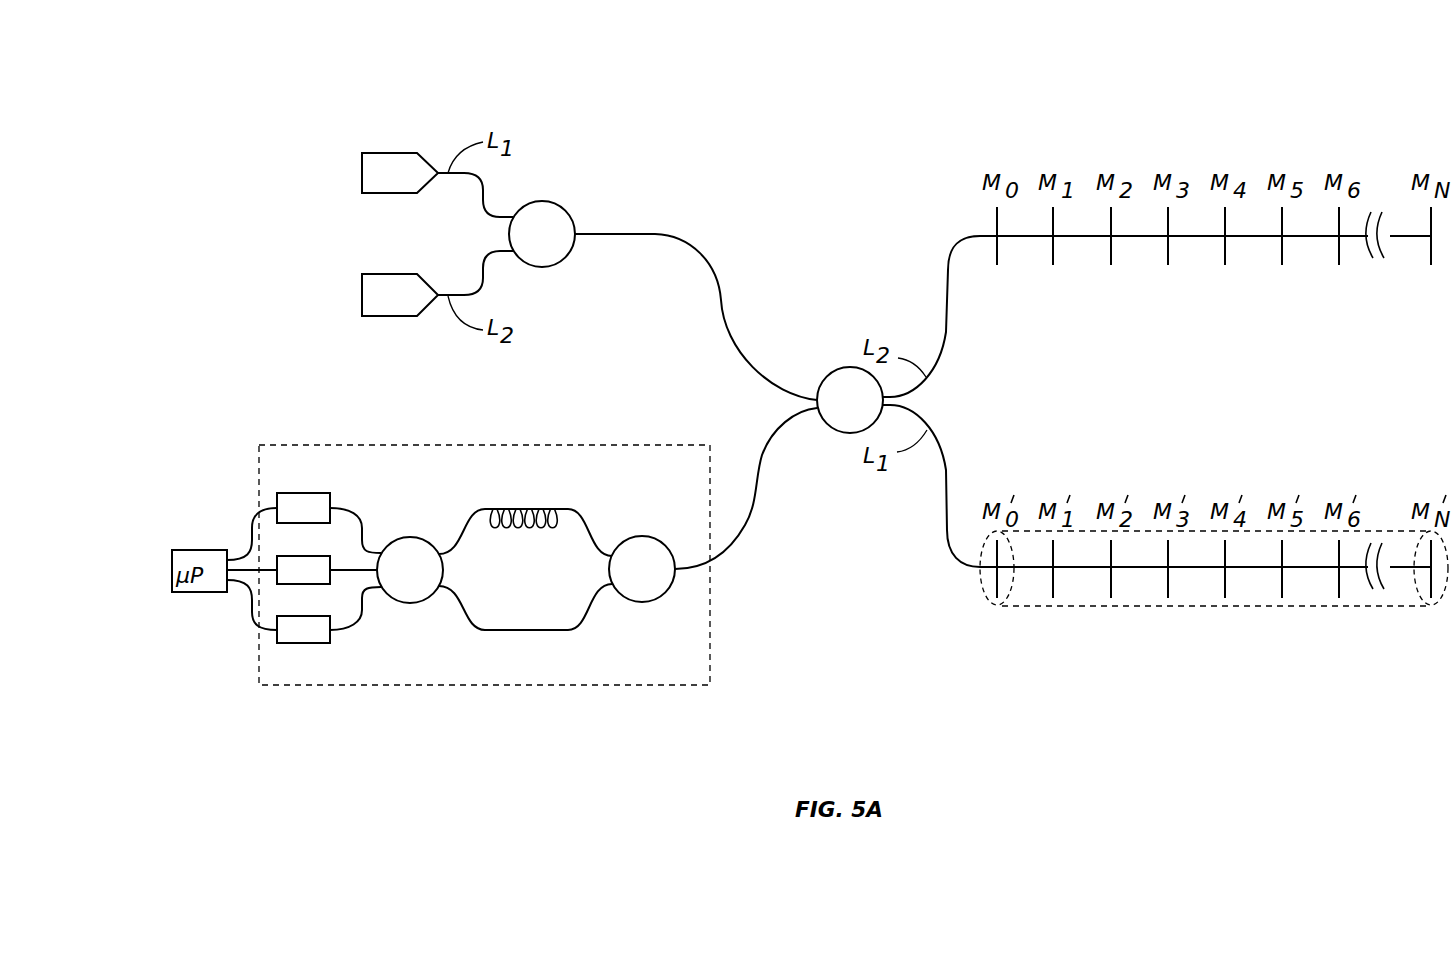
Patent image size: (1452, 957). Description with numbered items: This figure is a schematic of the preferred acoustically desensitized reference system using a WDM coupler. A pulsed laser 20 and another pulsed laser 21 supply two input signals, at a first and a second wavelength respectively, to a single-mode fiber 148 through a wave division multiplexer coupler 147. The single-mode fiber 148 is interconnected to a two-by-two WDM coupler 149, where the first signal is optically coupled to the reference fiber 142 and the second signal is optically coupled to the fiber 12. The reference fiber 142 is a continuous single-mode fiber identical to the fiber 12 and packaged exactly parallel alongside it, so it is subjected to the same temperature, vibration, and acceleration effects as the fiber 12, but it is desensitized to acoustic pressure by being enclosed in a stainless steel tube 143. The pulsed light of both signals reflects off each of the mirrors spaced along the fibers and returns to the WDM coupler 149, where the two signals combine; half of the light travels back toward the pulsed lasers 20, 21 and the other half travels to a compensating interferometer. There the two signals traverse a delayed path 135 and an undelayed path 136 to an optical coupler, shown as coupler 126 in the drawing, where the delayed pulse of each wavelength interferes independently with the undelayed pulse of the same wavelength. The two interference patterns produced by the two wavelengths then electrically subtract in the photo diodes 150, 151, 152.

The pulsed laser 20 is at (392, 152).
The pulsed laser 21 is at (392, 274).
The wave division multiplexer coupler 147 is at (545, 201).
The single-mode fiber 148 is at (723, 300).
The 2×2 WDM coupler 149 is at (850, 367).
The fiber 12 is at (948, 322).
The reference fiber 142 is at (947, 535).
The stainless steel tube 143 is at (1195, 607).
The photo diode 150 is at (303, 493).
The photo diode 151 is at (322, 556).
The photo diode 152 is at (303, 643).
The delayed path 135 is at (533, 509).
The undelayed path 136 is at (532, 630).
The optical coupler 126 is at (640, 537).